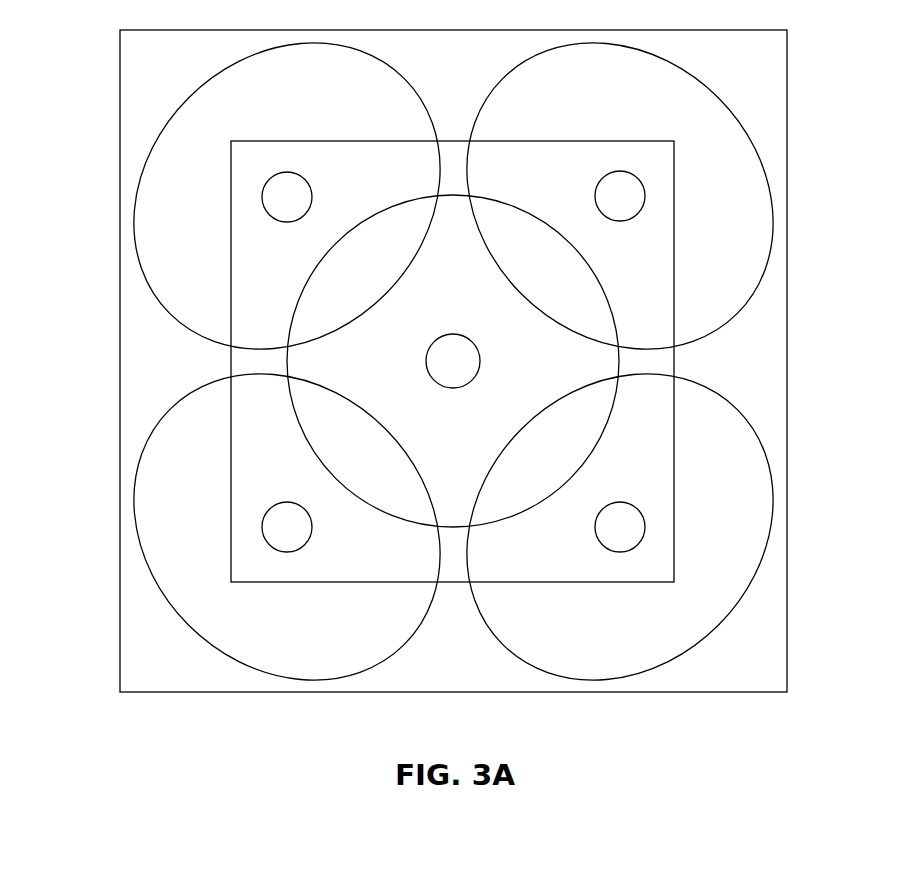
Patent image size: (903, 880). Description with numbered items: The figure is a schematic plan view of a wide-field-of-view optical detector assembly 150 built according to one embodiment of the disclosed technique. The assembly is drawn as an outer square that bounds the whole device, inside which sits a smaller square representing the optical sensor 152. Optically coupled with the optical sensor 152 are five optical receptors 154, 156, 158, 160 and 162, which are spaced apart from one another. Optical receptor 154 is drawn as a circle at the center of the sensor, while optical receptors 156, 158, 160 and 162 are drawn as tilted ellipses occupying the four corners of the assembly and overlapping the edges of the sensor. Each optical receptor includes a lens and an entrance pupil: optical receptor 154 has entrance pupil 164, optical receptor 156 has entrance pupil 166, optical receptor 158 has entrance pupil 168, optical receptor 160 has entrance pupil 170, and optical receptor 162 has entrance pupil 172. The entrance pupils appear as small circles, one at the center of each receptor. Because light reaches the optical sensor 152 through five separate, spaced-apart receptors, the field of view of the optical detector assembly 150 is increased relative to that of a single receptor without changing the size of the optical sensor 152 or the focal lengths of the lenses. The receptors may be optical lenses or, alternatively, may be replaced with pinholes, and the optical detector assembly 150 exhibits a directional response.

The WFOV optical detector assembly 150 is at (787, 568).
The optical sensor 152 is at (675, 208).
The optical receptor 154 is at (618, 348).
The optical receptor 156 is at (687, 647).
The optical receptor 158 is at (243, 666).
The optical receptor 160 is at (510, 72).
The optical receptor 162 is at (408, 85).
The entrance pupil 164 is at (426, 360).
The entrance pupil 166 is at (595, 530).
The entrance pupil 168 is at (312, 531).
The entrance pupil 170 is at (595, 190).
The entrance pupil 172 is at (312, 193).